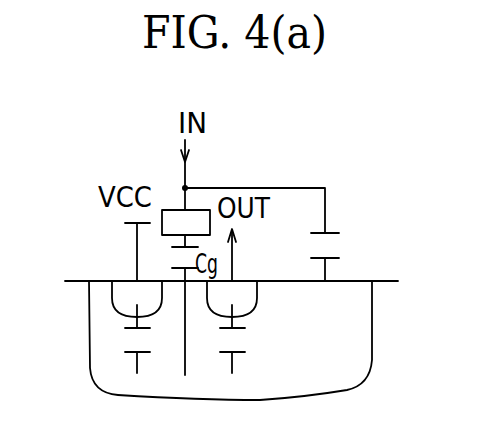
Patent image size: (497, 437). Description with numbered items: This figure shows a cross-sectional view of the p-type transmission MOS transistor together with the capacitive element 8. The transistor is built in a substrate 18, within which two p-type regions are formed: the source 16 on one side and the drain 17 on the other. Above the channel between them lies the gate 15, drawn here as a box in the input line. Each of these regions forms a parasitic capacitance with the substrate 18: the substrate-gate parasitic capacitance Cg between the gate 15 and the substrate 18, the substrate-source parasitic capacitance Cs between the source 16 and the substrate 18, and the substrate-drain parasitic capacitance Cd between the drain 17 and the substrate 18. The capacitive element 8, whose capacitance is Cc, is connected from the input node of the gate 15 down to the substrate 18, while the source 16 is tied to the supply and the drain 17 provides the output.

The capacitive element 8 is at (332, 233).
The gate 15 is at (197, 210).
The source 16 is at (120, 280).
The drain 17 is at (243, 280).
The substrate 18 is at (342, 350).